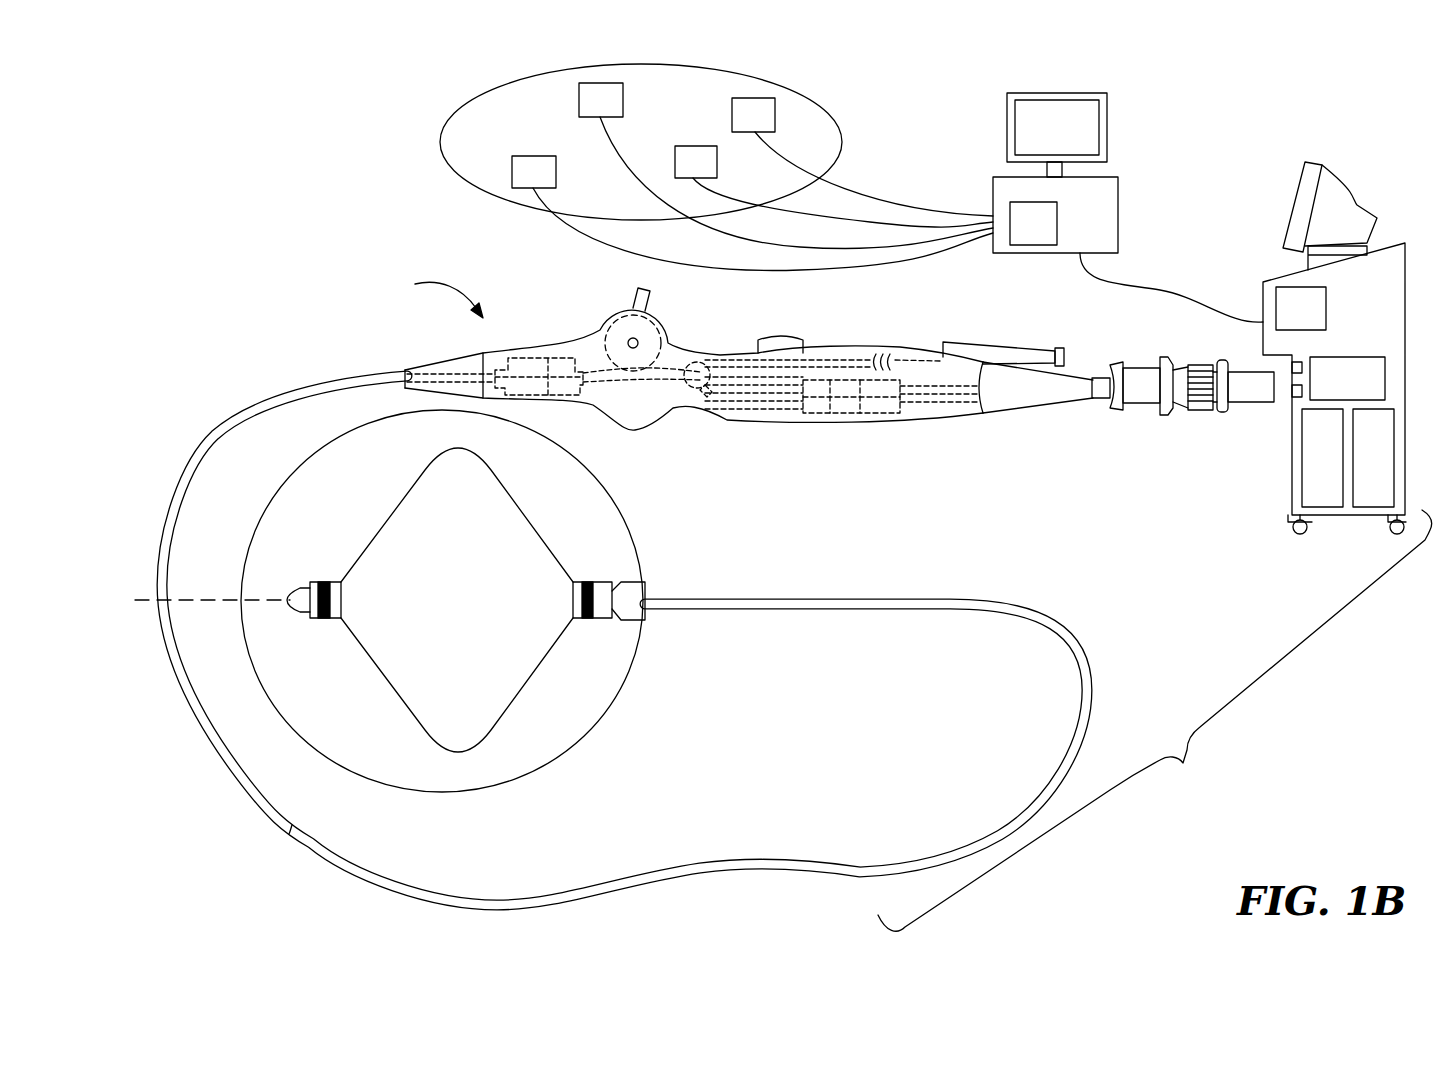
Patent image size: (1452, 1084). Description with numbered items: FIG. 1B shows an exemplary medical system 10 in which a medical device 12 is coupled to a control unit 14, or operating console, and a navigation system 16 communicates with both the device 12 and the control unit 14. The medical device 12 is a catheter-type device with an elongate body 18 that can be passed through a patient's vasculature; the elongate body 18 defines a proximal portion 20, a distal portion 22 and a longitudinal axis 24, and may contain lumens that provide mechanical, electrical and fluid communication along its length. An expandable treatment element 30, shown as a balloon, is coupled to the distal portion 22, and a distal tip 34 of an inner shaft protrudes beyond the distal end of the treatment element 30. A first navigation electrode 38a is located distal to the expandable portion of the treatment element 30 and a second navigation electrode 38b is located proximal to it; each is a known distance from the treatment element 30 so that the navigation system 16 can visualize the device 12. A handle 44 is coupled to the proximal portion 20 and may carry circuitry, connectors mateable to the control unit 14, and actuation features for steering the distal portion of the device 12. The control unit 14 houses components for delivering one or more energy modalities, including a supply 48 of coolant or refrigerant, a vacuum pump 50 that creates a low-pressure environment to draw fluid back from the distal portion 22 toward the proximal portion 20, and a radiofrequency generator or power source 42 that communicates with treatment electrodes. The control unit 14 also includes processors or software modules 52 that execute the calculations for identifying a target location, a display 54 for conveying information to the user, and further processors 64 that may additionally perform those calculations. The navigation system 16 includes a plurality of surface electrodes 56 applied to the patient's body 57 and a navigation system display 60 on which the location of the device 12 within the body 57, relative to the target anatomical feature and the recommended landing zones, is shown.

The medical system 10 is at (1155, 720).
The medical device 12 is at (430, 294).
The control unit 14 is at (1384, 307).
The navigation system 16 is at (1098, 218).
The elongate body 18 is at (288, 822).
The proximal portion 20 is at (236, 406).
The distal portion 22 is at (622, 580).
The longitudinal axis 24 is at (200, 598).
The expandable treatment element 30 is at (500, 480).
The distal tip 34 is at (297, 588).
The first navigation electrode 38a is at (325, 620).
The second navigation electrode 38b is at (587, 620).
The radiofrequency generator 42 is at (1361, 391).
The handle 44 is at (857, 352).
The fluid supply 48 is at (1337, 470).
The vacuum pump 50 is at (1387, 470).
The processor 52 is at (1047, 237).
The display 54 is at (1293, 187).
The surface electrodes 56 is at (540, 156).
The patient's body 57 is at (440, 152).
The navigation system display 60 is at (1070, 138).
The processor 64 is at (1315, 322).